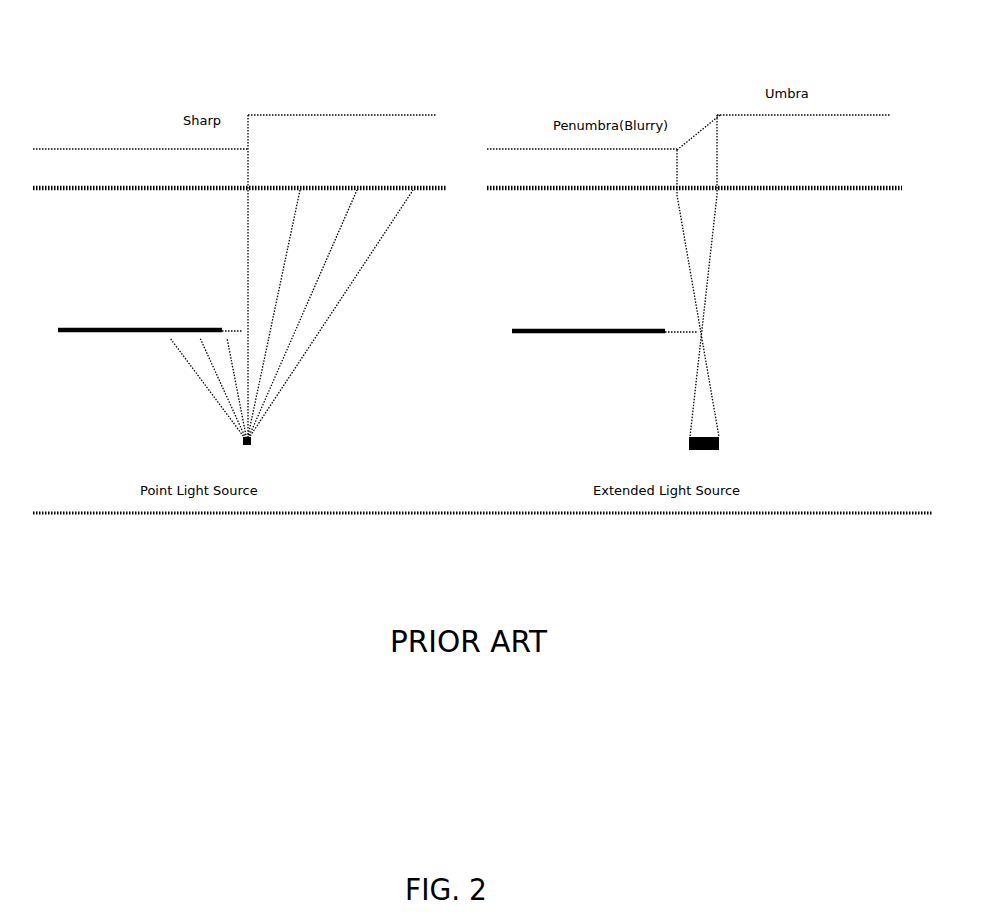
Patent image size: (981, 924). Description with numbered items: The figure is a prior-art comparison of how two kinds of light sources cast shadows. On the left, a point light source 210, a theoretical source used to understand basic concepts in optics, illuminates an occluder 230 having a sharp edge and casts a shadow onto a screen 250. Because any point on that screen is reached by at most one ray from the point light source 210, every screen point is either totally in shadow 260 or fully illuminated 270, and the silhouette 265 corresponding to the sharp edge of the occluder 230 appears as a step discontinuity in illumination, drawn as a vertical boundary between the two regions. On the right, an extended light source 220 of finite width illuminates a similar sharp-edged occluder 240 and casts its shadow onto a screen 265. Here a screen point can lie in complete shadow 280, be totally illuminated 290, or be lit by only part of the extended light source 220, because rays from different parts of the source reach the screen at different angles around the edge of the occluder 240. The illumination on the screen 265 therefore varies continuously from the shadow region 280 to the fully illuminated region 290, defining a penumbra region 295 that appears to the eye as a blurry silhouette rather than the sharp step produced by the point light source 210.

The point light source 210 is at (252, 443).
The extended light source 220 is at (719, 443).
The occluder 230 is at (112, 332).
The occluder 240 is at (559, 330).
The screen 250 is at (127, 189).
The shadow region 260 is at (109, 149).
The screen / silhouette 265 is at (248, 105).
The fully illuminated region 270 is at (331, 117).
The shadow region 280 is at (541, 149).
The fully illuminated region 290 is at (831, 117).
The penumbra region 295 is at (698, 133).